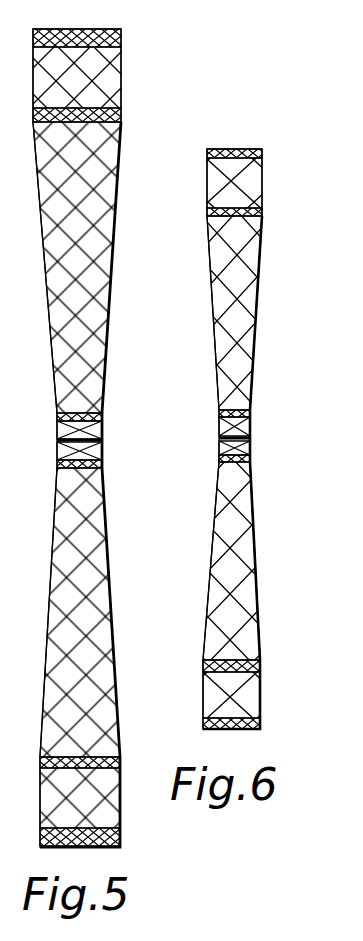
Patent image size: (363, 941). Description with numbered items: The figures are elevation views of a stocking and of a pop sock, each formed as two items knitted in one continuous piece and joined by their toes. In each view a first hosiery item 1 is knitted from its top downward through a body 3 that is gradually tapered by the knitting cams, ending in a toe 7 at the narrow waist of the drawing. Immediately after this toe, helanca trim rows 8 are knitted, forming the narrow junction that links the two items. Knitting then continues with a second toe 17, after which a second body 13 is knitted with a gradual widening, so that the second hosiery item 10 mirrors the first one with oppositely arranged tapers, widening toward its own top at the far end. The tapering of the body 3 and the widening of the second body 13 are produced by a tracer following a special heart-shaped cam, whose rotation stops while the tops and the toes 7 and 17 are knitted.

In FIG. 5, the first hosiery item 1 is at (123, 197).
In FIG. 6, the first hosiery item 1 is at (268, 305).
In FIG. 5, the body 3 is at (94, 276).
In FIG. 6, the body 3 is at (240, 317).
In FIG. 5, the toe 7 is at (98, 422).
In FIG. 6, the toe 7 is at (238, 400).
In FIG. 5, the helanca trim rows 8 is at (92, 439).
In FIG. 6, the helanca trim rows 8 is at (247, 440).
In FIG. 5, the second toe 17 is at (92, 452).
In FIG. 6, the second toe 17 is at (235, 478).
In FIG. 5, the second hosiery item 10 is at (116, 626).
In FIG. 6, the second hosiery item 10 is at (262, 616).
In FIG. 5, the second body 13 is at (97, 709).
In FIG. 6, the second body 13 is at (240, 645).